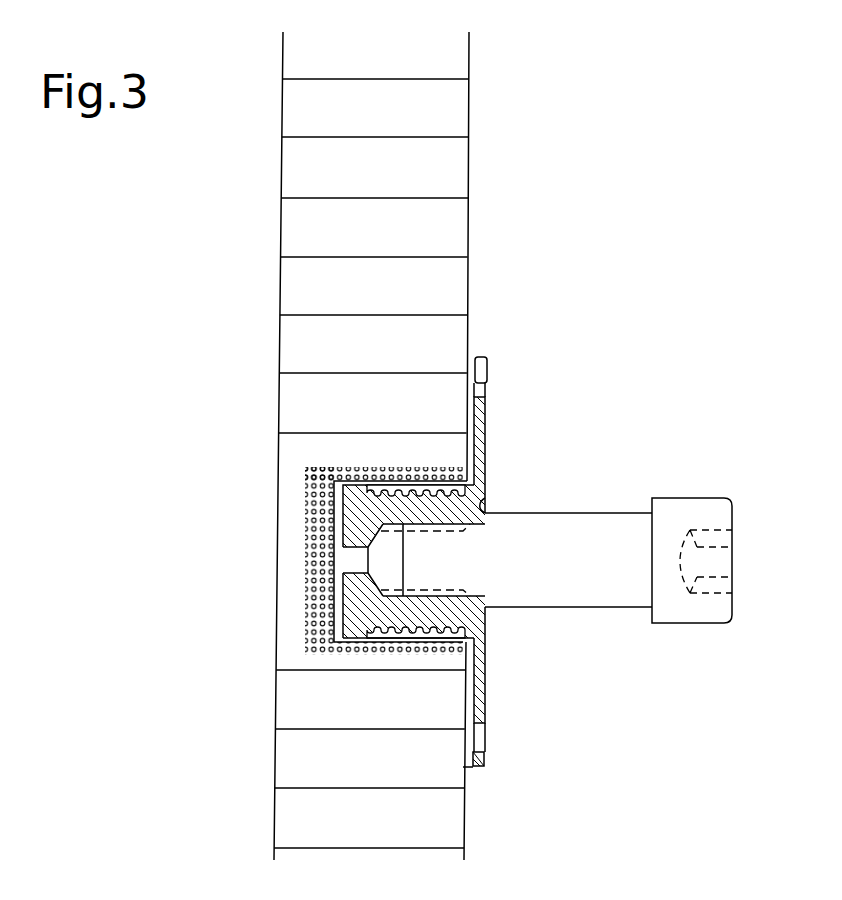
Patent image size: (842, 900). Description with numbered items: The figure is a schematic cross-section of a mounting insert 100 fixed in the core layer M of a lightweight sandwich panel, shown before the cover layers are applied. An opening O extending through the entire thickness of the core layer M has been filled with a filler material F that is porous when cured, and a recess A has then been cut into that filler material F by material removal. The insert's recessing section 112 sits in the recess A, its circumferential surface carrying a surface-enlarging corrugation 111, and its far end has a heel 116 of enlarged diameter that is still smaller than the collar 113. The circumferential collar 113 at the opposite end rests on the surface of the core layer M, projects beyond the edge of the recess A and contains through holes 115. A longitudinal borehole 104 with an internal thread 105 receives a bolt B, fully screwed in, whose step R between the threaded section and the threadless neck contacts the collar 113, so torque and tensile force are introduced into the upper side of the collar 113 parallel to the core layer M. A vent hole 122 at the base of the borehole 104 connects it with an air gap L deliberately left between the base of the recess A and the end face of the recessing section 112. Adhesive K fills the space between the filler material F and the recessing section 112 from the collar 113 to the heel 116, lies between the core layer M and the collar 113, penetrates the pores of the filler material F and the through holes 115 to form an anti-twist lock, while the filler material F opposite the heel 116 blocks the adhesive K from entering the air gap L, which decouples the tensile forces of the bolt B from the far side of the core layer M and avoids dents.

The mounting insert 100 is at (497, 462).
The corrugation 111 is at (393, 503).
The recessing section 112 is at (407, 493).
The heel 116 is at (352, 488).
The filler material F is at (322, 492).
The air gap L is at (338, 522).
The vent hole 122 is at (353, 558).
The opening O is at (318, 601).
The borehole 104 is at (387, 565).
The internal thread 105 is at (393, 596).
The recess A is at (405, 642).
The core layer M is at (284, 748).
The collar 113 is at (480, 689).
The adhesive K is at (475, 383).
The through holes 115 is at (488, 381).
The step R is at (483, 507).
The bolt B is at (625, 607).